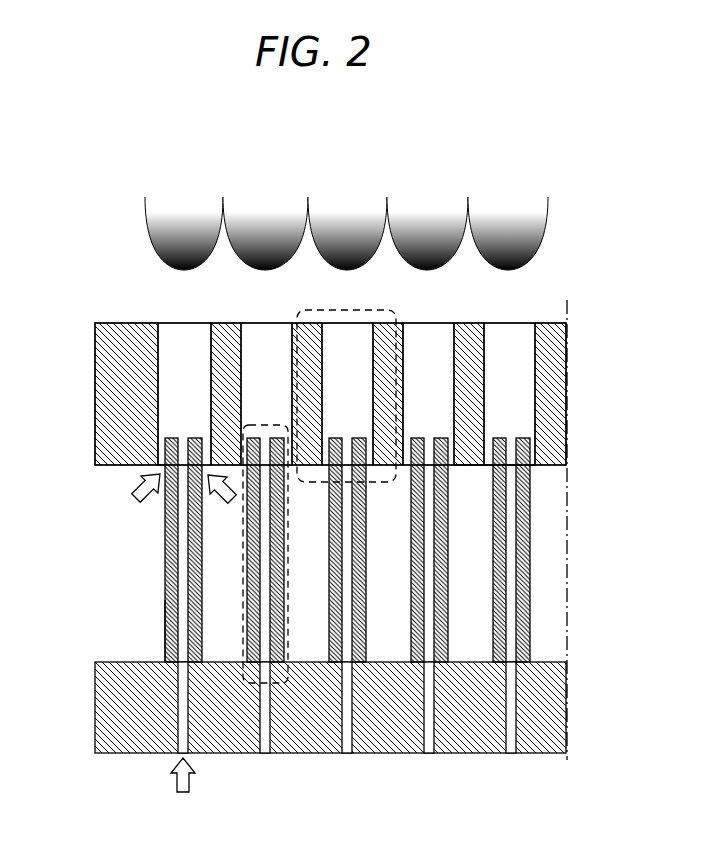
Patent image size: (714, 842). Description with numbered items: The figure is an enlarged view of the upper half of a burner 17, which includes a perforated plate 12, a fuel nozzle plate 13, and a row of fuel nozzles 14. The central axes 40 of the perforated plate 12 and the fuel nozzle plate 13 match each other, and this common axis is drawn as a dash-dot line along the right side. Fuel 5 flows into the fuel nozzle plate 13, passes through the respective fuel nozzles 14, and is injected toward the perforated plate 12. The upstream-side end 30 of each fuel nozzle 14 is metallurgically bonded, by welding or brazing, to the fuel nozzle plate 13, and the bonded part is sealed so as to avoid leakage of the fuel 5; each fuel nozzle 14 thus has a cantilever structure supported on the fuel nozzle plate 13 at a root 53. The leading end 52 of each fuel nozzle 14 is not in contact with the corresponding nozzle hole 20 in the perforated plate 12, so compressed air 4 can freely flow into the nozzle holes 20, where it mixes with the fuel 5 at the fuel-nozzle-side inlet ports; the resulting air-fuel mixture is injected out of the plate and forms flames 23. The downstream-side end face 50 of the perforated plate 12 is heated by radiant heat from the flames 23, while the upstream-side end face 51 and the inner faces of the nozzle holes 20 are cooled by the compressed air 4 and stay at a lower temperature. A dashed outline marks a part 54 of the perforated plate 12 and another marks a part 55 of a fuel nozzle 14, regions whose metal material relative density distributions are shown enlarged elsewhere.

The compressed air 4 is at (138, 498).
The fuel 5 is at (175, 783).
The perforated plate 12 is at (100, 366).
The fuel nozzle plate 13 is at (96, 676).
The fuel nozzle 14 is at (162, 585).
The burner 17 is at (102, 286).
The nozzle hole 20 is at (178, 325).
The flame 23 is at (510, 208).
The upstream-side end 30 is at (166, 665).
The central axis 40 is at (567, 300).
The downstream-side end face 50 is at (462, 322).
The upstream-side end face 51 is at (466, 470).
The leading end 52 is at (160, 467).
The root 53 is at (163, 647).
The part of the perforated plate 54 is at (368, 309).
The part of the fuel nozzle 55 is at (283, 683).